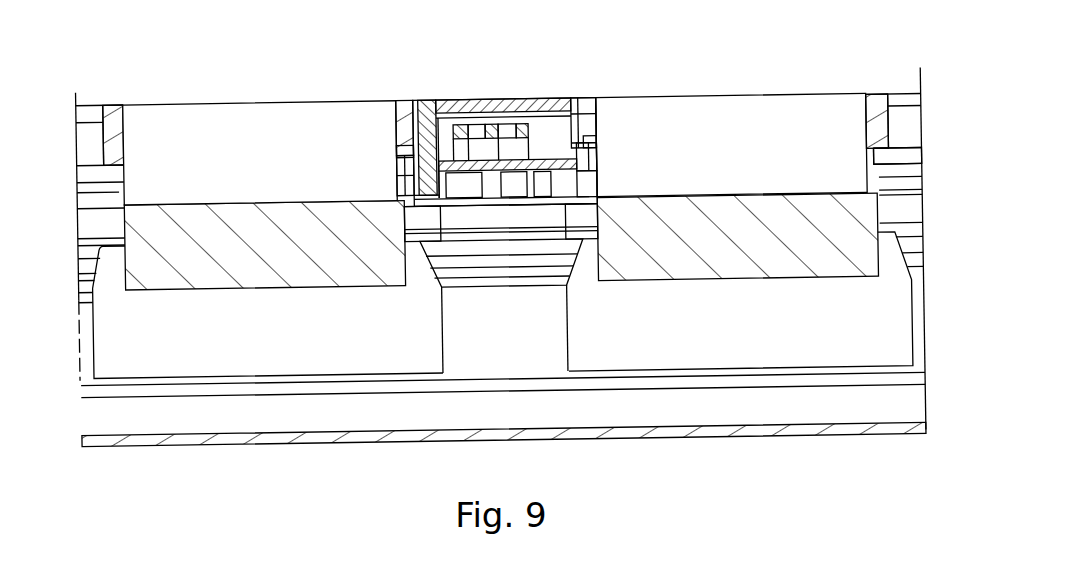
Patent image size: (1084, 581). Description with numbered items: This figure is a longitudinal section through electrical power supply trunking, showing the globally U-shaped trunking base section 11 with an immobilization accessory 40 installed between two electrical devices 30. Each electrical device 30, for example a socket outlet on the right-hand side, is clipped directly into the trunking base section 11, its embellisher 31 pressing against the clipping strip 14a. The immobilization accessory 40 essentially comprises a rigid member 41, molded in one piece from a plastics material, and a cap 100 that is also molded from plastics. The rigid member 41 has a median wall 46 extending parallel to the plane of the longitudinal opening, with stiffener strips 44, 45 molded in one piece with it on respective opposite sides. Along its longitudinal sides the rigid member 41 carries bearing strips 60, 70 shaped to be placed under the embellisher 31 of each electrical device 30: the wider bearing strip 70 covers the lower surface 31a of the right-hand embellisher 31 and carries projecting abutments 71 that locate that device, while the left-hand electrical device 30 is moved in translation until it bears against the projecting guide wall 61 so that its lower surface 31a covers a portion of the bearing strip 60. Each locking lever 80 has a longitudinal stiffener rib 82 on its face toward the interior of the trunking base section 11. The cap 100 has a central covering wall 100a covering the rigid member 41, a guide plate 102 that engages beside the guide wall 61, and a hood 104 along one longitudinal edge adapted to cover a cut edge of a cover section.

The trunking base section 11 is at (813, 446).
The clipping strip 14a is at (877, 166).
The electrical device 30 is at (225, 134).
The embellisher 31 is at (410, 113).
The lower surface 31a is at (410, 159).
The immobilization accessory 40 is at (559, 101).
The rigid member 41 is at (533, 214).
The stiffener strip 44 is at (424, 214).
The stiffener strip 45 is at (580, 220).
The median wall 46 is at (470, 178).
The bearing strip 60 is at (407, 167).
The guide wall 61 is at (421, 138).
The bearing strip 70 is at (593, 190).
The projecting abutment 71 is at (583, 153).
The locking lever 80 is at (460, 134).
The longitudinal stiffener rib 82 is at (515, 187).
The cap 100 is at (484, 102).
The central covering wall 100a is at (533, 104).
The guide plate 102 is at (428, 103).
The hood 104 is at (573, 105).